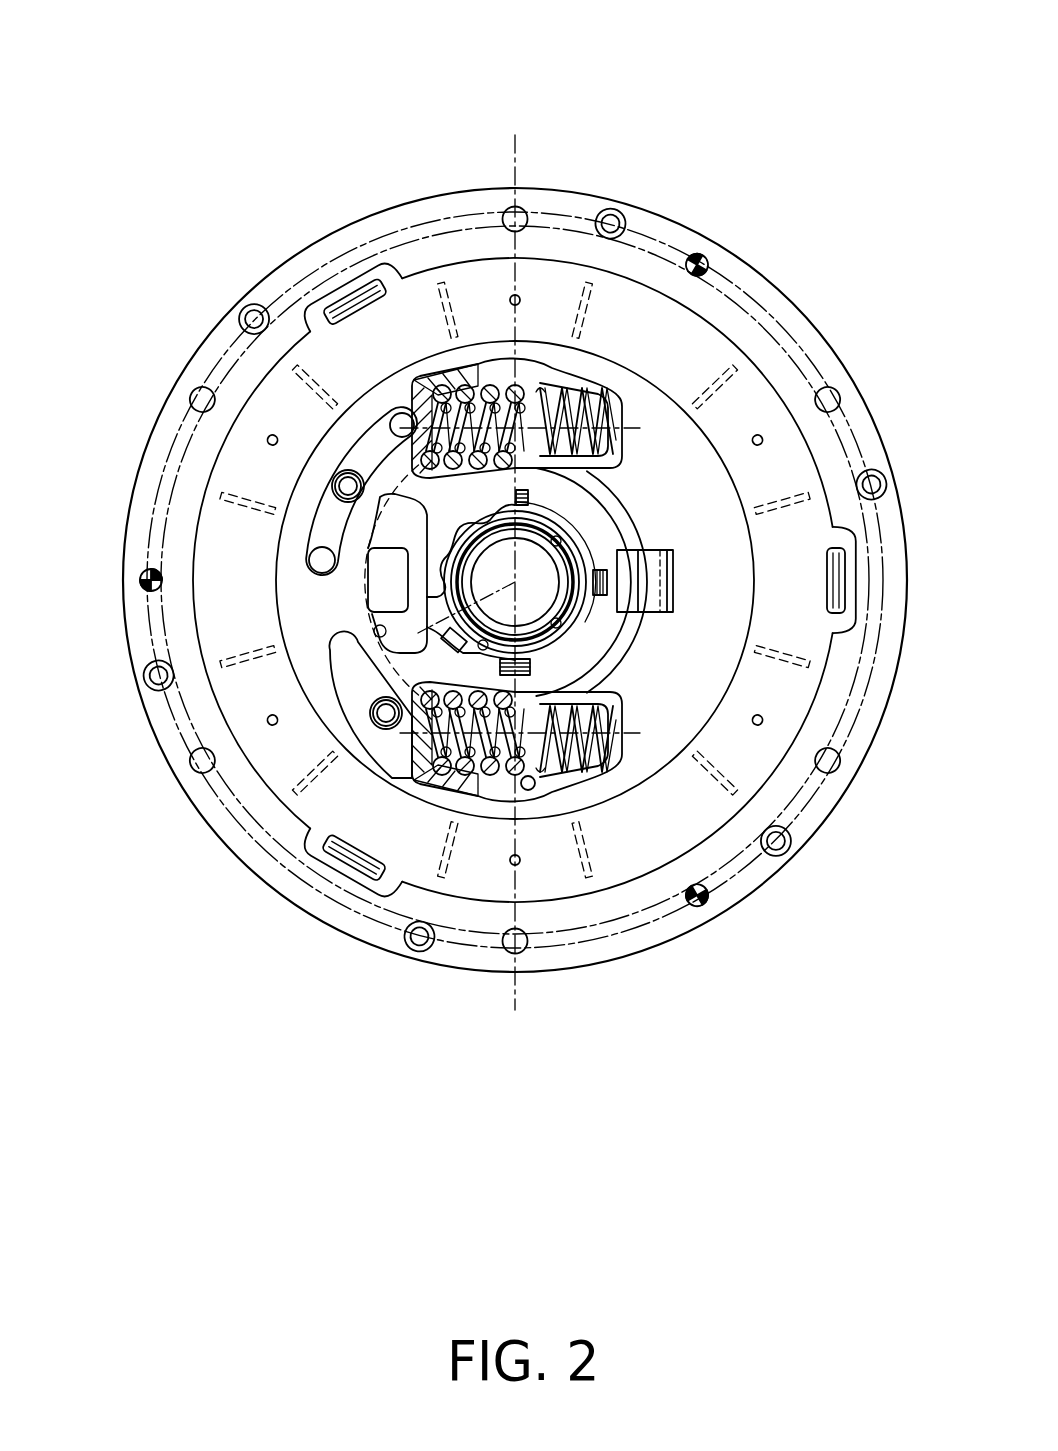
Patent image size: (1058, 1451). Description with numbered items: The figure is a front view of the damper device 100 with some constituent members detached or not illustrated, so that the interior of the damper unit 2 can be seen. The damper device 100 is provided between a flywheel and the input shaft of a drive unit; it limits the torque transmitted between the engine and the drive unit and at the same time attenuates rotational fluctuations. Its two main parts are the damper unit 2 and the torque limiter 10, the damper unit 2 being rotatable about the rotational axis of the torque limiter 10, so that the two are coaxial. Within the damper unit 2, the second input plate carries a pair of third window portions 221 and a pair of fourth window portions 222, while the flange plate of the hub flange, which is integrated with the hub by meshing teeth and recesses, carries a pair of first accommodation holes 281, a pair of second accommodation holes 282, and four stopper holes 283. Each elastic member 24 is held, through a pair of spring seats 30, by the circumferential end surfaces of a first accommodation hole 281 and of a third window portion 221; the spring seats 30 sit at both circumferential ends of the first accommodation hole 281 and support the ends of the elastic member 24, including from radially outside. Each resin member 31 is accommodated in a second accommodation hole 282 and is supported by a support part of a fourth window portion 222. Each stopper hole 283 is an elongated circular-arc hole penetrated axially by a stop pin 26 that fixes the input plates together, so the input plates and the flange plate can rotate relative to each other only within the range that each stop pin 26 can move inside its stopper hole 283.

The damper device 100 is at (501, 520).
The torque limiter 10 is at (762, 272).
The damper unit 2 is at (707, 460).
The elastic member 24 is at (541, 392).
The stop pin 26 is at (347, 483).
The spring seat 30 is at (470, 364).
The resin member 31 is at (383, 580).
The third window portion 221 is at (528, 790).
The fourth window portion 222 is at (648, 580).
The first accommodation hole 281 is at (517, 342).
The second accommodation hole 282 is at (373, 645).
The stopper hole 283 is at (367, 430).